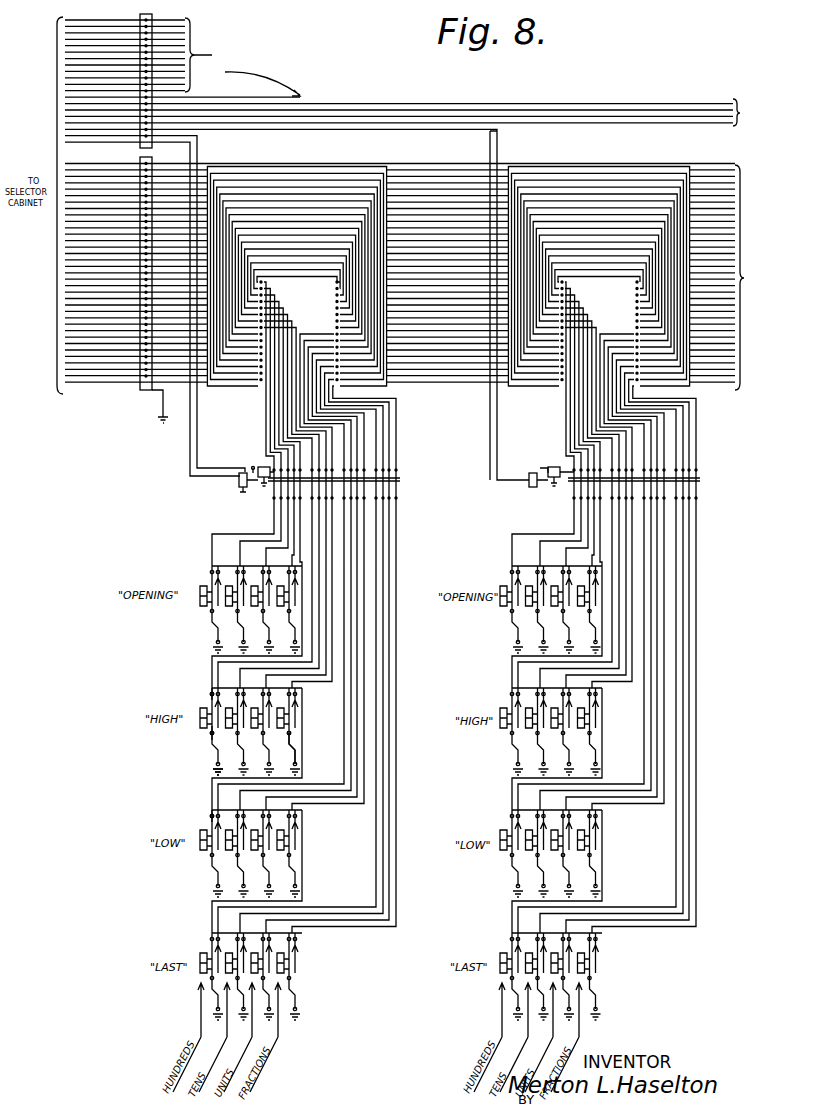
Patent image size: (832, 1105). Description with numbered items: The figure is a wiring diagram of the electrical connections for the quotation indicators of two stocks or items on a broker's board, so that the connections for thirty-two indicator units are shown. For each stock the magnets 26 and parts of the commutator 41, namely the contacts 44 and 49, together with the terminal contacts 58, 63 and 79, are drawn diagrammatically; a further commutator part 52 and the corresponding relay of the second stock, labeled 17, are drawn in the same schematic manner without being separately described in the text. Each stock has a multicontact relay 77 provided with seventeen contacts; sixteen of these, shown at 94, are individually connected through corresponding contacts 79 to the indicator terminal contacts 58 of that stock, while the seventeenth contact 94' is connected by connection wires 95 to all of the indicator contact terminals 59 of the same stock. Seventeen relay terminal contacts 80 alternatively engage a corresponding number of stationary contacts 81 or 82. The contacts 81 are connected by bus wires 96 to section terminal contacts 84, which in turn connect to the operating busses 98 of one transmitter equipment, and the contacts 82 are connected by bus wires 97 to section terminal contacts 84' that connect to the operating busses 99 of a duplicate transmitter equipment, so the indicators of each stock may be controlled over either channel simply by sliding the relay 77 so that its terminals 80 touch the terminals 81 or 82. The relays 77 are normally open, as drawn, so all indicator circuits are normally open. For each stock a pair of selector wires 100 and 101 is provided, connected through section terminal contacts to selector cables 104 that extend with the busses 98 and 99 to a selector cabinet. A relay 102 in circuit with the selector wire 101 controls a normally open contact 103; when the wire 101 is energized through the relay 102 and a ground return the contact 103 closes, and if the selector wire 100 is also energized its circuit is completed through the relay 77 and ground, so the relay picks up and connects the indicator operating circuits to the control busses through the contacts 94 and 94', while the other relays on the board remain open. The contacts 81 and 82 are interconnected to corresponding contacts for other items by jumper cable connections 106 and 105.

The selector cables 104 is at (112, 108).
The operating busses 99 is at (94, 248).
The section terminal contacts 84' is at (297, 304).
The section terminal contacts 84 is at (130, 300).
The bus wires 97 is at (298, 198).
The jumper cable connections 106 is at (424, 238).
The jumper cable connections 105 is at (455, 378).
The relay terminal contacts 80 is at (266, 312).
The stationary contacts 82 is at (336, 345).
The stationary contacts 81 is at (262, 388).
The operating busses 98 is at (88, 360).
The bus wires 96 is at (178, 378).
The selector wire 100 is at (198, 436).
The selector wire 101 is at (190, 447).
The relay 102 is at (238, 481).
The contact 103 is at (243, 466).
The multicontact relay 77 is at (262, 467).
The relay 17 is at (560, 466).
The contacts 94 is at (511, 500).
The seventeenth contact 94' is at (366, 530).
The connection wires 95 is at (213, 531).
The magnet 26 is at (202, 584).
The indicator terminal contact 58 is at (211, 691).
The indicator contact terminal 59 is at (296, 708).
The contact 49 is at (292, 733).
The armature 52 is at (294, 746).
The contact 44 is at (298, 756).
The commutator 41 is at (203, 745).
The terminal contact 63 is at (214, 771).
The contacts 79 is at (217, 816).